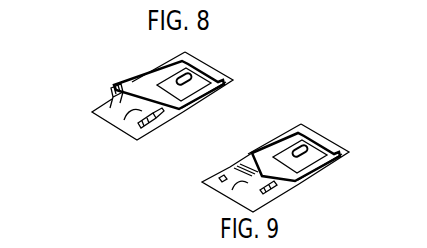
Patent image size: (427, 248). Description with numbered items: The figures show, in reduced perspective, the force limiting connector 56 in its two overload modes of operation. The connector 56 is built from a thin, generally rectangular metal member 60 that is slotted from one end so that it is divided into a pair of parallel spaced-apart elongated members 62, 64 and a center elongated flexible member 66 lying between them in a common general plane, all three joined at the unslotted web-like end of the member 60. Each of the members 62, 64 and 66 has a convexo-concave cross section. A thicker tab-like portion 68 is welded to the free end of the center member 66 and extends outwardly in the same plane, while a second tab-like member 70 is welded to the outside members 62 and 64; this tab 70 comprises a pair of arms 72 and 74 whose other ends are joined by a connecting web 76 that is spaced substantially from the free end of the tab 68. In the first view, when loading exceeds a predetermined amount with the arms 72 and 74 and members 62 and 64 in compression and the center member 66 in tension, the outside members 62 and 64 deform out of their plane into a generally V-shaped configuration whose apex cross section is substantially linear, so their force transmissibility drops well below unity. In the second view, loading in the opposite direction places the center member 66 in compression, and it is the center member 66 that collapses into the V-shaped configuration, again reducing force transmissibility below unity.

In FIG. 8, the force limiting connector 56 is at (110, 63).
In FIG. 9, the force limiting connector 56 is at (317, 188).
In FIG. 8, the metal member 60 is at (88, 112).
In FIG. 9, the metal member 60 is at (199, 185).
In FIG. 8, the elongated member 62 is at (110, 97).
In FIG. 9, the elongated member 62 is at (223, 177).
In FIG. 8, the elongated member 64 is at (150, 125).
In FIG. 9, the elongated member 64 is at (266, 195).
In FIG. 8, the center elongated flexible member 66 is at (128, 115).
In FIG. 9, the center elongated flexible member 66 is at (237, 184).
In FIG. 8, the tab-like portion 68 is at (192, 66).
In FIG. 9, the tab-like portion 68 is at (310, 140).
In FIG. 8, the second tab-like member 70 is at (233, 88).
In FIG. 9, the second tab-like member 70 is at (347, 158).
In FIG. 8, the arm 72 is at (163, 68).
In FIG. 9, the arm 72 is at (281, 143).
In FIG. 8, the arm 74 is at (207, 95).
In FIG. 9, the arm 74 is at (321, 167).
In FIG. 8, the connecting web 76 is at (218, 70).
In FIG. 9, the connecting web 76 is at (333, 144).